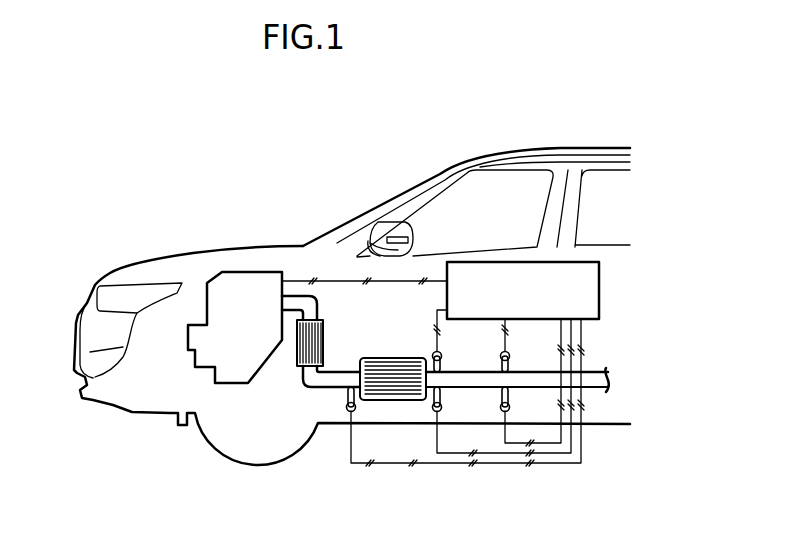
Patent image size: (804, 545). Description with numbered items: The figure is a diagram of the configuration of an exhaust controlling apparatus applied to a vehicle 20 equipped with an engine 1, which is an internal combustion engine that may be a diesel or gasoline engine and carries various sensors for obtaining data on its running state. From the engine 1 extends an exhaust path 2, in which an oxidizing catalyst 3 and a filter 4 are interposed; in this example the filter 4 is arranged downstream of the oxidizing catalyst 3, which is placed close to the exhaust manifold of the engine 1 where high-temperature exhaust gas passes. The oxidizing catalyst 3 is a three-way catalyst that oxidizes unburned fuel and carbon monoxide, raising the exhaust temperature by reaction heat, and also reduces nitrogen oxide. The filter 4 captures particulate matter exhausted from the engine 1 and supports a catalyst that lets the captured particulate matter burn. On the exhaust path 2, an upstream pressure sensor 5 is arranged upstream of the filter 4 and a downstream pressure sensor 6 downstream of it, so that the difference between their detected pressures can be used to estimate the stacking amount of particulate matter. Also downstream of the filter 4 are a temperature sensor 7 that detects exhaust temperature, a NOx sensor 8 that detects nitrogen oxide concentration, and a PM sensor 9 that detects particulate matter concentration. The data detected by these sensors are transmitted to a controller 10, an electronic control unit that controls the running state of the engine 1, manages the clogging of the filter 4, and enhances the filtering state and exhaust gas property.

The engine 1 is at (253, 340).
The exhaust path 2 is at (305, 388).
The oxidizing catalyst 3 is at (323, 330).
The filter 4 is at (393, 358).
The upstream pressure sensor 5 is at (348, 408).
The downstream pressure sensor 6 is at (443, 407).
The temperature sensor 7 is at (443, 356).
The NOx sensor 8 is at (511, 407).
The PM sensor 9 is at (511, 356).
The controller 10 is at (600, 292).
The vehicle 20 is at (207, 200).